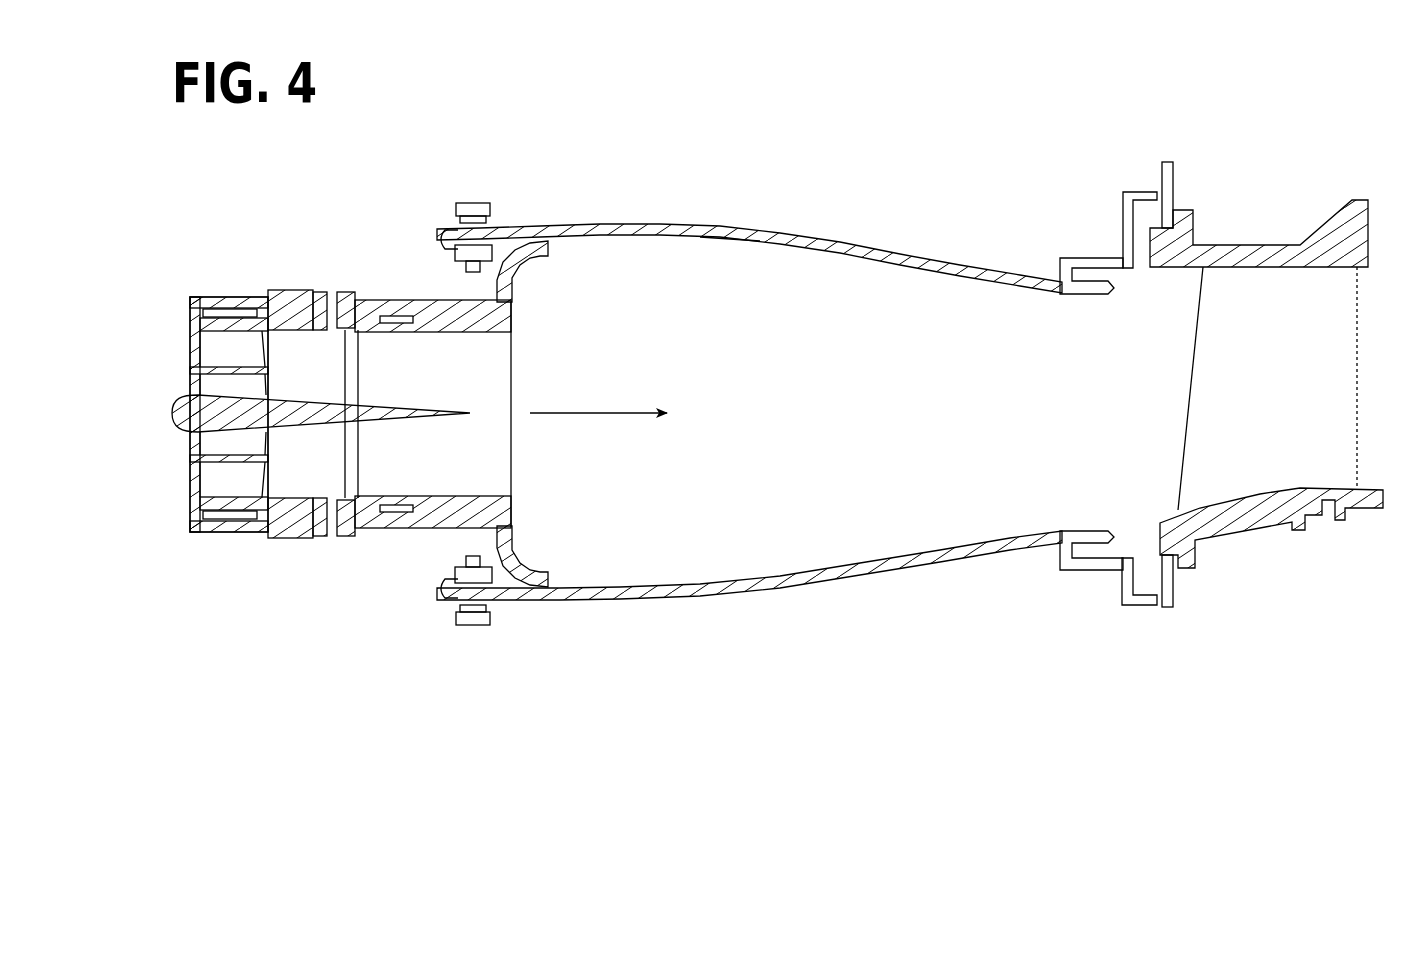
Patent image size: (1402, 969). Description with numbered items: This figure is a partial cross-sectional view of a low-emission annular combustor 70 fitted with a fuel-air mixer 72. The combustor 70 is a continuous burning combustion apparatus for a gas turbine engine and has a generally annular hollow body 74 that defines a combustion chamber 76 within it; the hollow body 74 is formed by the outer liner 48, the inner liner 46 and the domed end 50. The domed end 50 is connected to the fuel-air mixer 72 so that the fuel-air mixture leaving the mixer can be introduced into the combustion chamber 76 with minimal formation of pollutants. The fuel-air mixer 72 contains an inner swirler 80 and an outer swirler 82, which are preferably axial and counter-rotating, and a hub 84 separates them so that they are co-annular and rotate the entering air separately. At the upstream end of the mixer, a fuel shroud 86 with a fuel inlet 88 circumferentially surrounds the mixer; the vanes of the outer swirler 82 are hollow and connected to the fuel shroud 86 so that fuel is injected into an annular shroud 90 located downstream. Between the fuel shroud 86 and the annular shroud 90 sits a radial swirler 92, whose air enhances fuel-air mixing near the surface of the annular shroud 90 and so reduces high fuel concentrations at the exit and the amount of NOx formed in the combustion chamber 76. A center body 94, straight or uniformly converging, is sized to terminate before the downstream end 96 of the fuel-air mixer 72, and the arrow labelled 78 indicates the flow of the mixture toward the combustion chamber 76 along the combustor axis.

The inner liner 46 is at (757, 578).
The outer liner 48 is at (742, 246).
The domed end 50 is at (538, 572).
The low-emission annular combustor 70 is at (822, 178).
The fuel-air mixer 72 is at (236, 560).
The hollow body 74 is at (855, 237).
The combustion chamber 76 is at (862, 397).
The flow direction 78 is at (522, 452).
The inner swirler 80 is at (222, 384).
The outer swirler 82 is at (210, 347).
The hub 84 is at (270, 368).
The fuel shroud 86 is at (207, 297).
The fuel inlet 88 is at (232, 296).
The annular shroud 90 is at (422, 337).
The radial swirler 92 is at (315, 290).
The center body 94 is at (422, 427).
The downstream end 96 is at (512, 363).